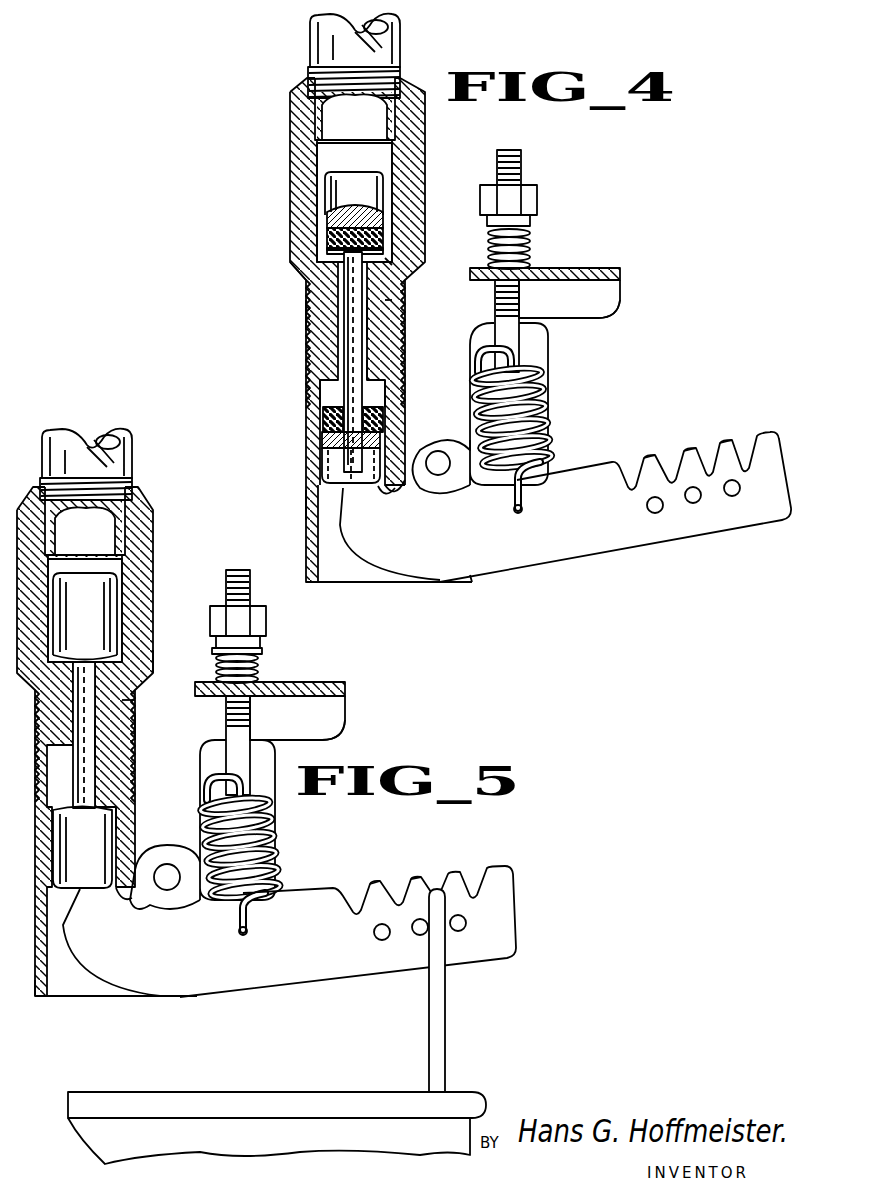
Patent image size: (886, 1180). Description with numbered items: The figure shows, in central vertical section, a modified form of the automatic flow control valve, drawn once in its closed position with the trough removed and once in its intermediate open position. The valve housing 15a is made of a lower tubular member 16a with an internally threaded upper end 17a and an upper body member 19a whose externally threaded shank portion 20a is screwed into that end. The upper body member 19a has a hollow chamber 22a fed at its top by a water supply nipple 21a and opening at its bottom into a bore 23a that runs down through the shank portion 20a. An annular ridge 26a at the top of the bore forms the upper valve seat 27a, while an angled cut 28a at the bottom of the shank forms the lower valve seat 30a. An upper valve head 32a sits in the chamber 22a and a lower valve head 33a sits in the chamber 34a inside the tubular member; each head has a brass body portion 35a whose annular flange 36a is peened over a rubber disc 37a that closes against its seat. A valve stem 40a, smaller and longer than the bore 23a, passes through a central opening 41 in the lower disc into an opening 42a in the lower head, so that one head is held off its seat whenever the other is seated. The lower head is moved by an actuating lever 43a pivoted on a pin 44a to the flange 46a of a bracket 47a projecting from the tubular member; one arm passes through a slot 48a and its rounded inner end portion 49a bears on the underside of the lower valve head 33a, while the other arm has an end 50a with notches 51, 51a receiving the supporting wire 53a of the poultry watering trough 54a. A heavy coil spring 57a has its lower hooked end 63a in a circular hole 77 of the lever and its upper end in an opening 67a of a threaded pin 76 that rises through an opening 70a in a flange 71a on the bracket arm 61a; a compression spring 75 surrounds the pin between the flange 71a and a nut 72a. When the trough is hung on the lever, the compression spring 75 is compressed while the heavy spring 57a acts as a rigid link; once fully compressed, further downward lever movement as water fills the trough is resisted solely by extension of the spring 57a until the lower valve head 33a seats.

In FIG. 4, the valve housing 15a is at (300, 290).
In FIG. 5, the valve housing 15a is at (158, 572).
In FIG. 4, the lower tubular member 16a is at (306, 498).
In FIG. 5, the lower tubular member 16a is at (42, 996).
In FIG. 4, the internally threaded upper end 17a is at (308, 316).
In FIG. 5, the internally threaded upper end 17a is at (128, 727).
In FIG. 4, the upper body member 19a is at (405, 158).
In FIG. 5, the upper body member 19a is at (150, 497).
In FIG. 4, the shank portion 20a is at (394, 305).
In FIG. 5, the shank portion 20a is at (106, 710).
In FIG. 4, the water supply nipple 21a is at (394, 46).
In FIG. 5, the water supply nipple 21a is at (112, 462).
In FIG. 4, the chamber 22a is at (302, 162).
In FIG. 5, the chamber 22a is at (125, 566).
In FIG. 4, the bore 23a is at (370, 322).
In FIG. 5, the bore 23a is at (100, 745).
In FIG. 4, the annular ridge 26a is at (398, 268).
In FIG. 5, the annular ridge 26a is at (100, 670).
In FIG. 4, the valve seat 27a is at (335, 264).
In FIG. 5, the valve seat 27a is at (96, 655).
In FIG. 4, the angled cut 28a is at (330, 384).
In FIG. 5, the angled cut 28a is at (98, 800).
In FIG. 4, the lower valve seat 30a is at (368, 390).
In FIG. 5, the lower valve seat 30a is at (118, 808).
In FIG. 4, the upper valve head 32a is at (322, 207).
In FIG. 5, the upper valve head 32a is at (86, 597).
In FIG. 4, the lower valve head 33a is at (328, 455).
In FIG. 5, the lower valve head 33a is at (108, 854).
In FIG. 4, the chamber 34a is at (328, 532).
In FIG. 4, the body portion 35a is at (332, 190).
In FIG. 4, the annular flange 36a is at (330, 237).
In FIG. 4, the rubber disc 37a is at (382, 238).
In FIG. 4, the valve stem 40a is at (350, 350).
In FIG. 5, the valve stem 40a is at (82, 775).
In FIG. 4, the central opening 41 is at (345, 398).
In FIG. 4, the opening 42a is at (368, 489).
In FIG. 4, the actuating lever 43a is at (565, 548).
In FIG. 4, the pin 44a is at (441, 466).
In FIG. 5, the pin 44a is at (166, 880).
In FIG. 4, the flange 46a is at (462, 359).
In FIG. 5, the flange 46a is at (187, 839).
In FIG. 4, the bracket 47a is at (606, 300).
In FIG. 5, the bracket 47a is at (336, 705).
In FIG. 4, the slot 48a is at (398, 484).
In FIG. 5, the slot 48a is at (127, 888).
In FIG. 4, the rounded inner end portion 49a is at (367, 490).
In FIG. 5, the rounded inner end portion 49a is at (80, 892).
In FIG. 4, the lever end 50a is at (700, 530).
In FIG. 5, the lever end 50a is at (348, 931).
In FIG. 5, the notches 51 is at (435, 882).
In FIG. 4, the notches 51a is at (722, 443).
In FIG. 5, the supporting wire 53a is at (444, 1008).
In FIG. 5, the poultry watering trough 54a is at (268, 1097).
In FIG. 4, the heavy coil spring 57a is at (540, 406).
In FIG. 5, the heavy coil spring 57a is at (272, 834).
In FIG. 4, the arm 61a is at (606, 314).
In FIG. 5, the arm 61a is at (332, 722).
In FIG. 4, the lower hooked end 63a is at (522, 488).
In FIG. 4, the opening 67a is at (514, 352).
In FIG. 5, the opening 67a is at (230, 766).
In FIG. 4, the opening 70a is at (521, 283).
In FIG. 5, the opening 70a is at (260, 700).
In FIG. 4, the flange 71a is at (620, 277).
In FIG. 5, the flange 71a is at (346, 690).
In FIG. 4, the nut 72a is at (508, 205).
In FIG. 5, the nut 72a is at (256, 622).
In FIG. 4, the compression spring 75 is at (532, 240).
In FIG. 5, the compression spring 75 is at (262, 660).
In FIG. 4, the threaded pin 76 is at (512, 150).
In FIG. 5, the threaded pin 76 is at (238, 574).
In FIG. 4, the circular hole 77 is at (522, 514).
In FIG. 5, the circular hole 77 is at (248, 933).